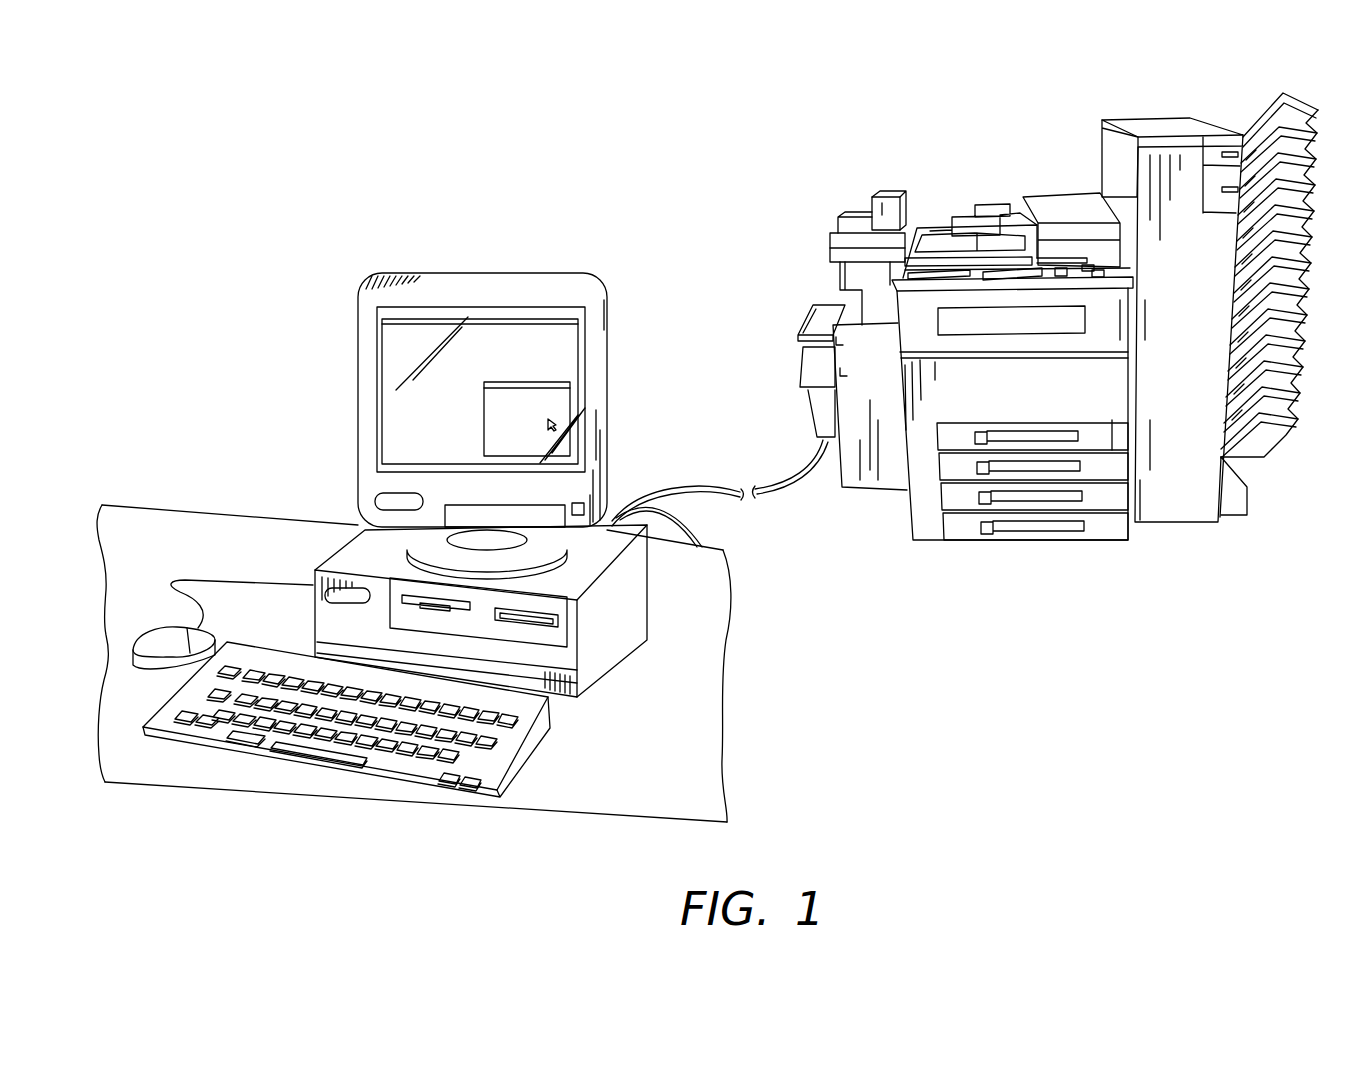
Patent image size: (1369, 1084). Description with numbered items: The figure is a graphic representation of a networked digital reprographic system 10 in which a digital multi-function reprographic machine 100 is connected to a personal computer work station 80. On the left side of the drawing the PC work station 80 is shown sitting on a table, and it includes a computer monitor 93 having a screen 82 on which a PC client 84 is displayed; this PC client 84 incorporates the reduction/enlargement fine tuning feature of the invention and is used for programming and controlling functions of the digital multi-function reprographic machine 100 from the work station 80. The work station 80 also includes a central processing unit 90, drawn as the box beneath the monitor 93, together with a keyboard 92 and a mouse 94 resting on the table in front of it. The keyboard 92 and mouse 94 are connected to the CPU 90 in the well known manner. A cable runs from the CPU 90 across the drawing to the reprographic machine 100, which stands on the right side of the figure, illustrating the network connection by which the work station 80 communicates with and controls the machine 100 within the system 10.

The networked digital reprographic system 10 is at (214, 136).
The PC work station 80 is at (264, 320).
The screen 82 is at (400, 348).
The PC client 84 is at (550, 388).
The central processing unit 90 is at (638, 588).
The keyboard 92 is at (520, 700).
The computer monitor 93 is at (405, 275).
The mouse 94 is at (168, 630).
The digital multi-function reprographic machine 100 is at (970, 187).